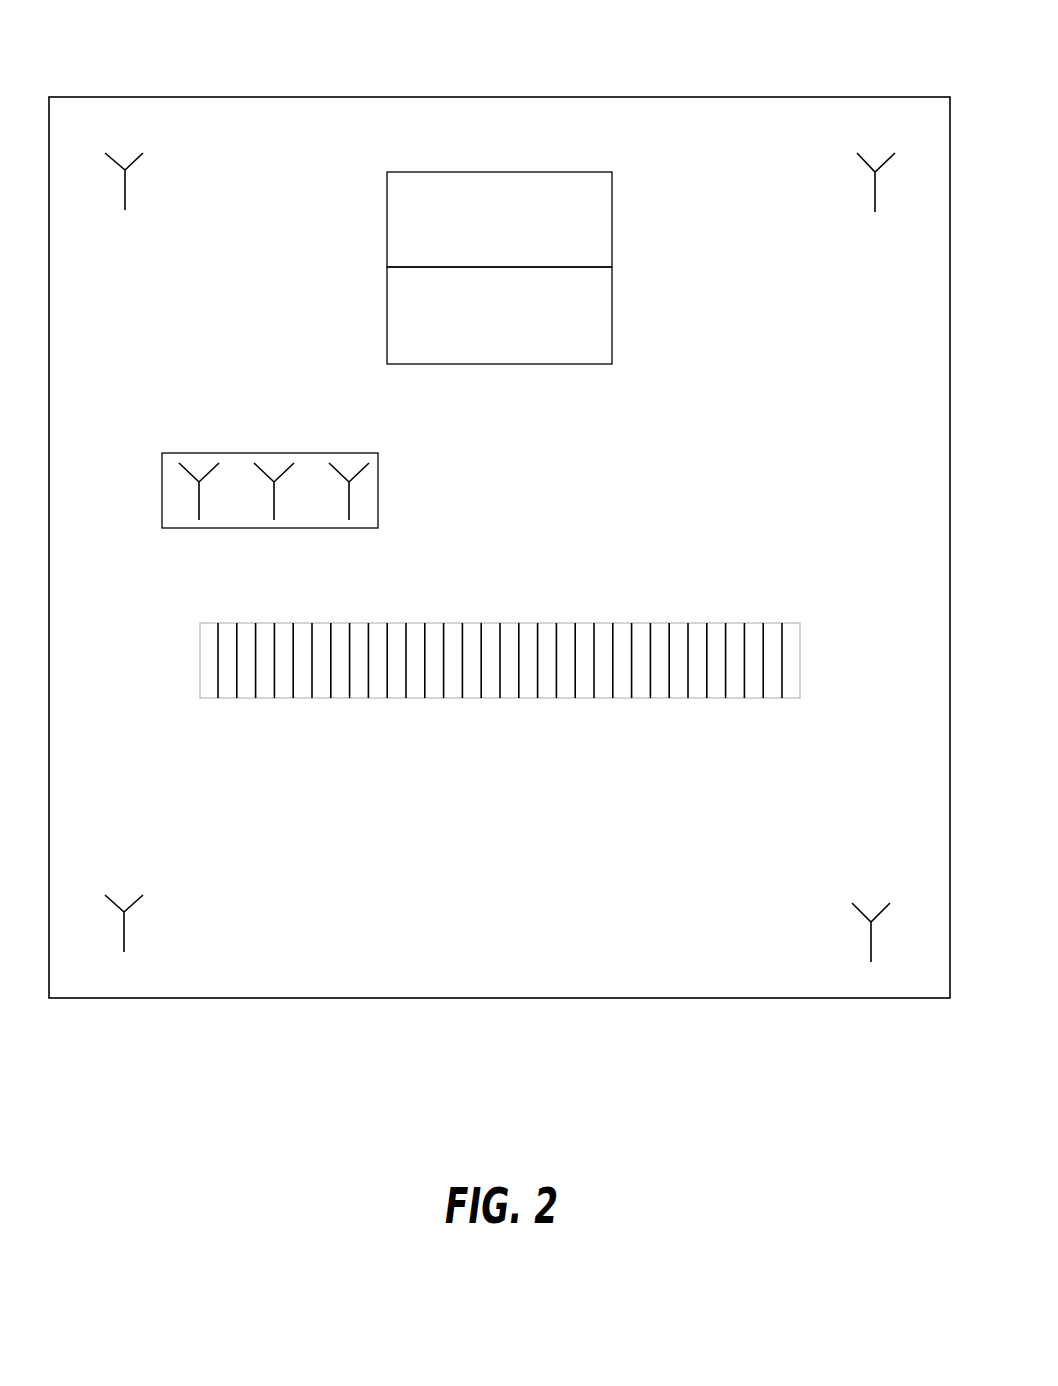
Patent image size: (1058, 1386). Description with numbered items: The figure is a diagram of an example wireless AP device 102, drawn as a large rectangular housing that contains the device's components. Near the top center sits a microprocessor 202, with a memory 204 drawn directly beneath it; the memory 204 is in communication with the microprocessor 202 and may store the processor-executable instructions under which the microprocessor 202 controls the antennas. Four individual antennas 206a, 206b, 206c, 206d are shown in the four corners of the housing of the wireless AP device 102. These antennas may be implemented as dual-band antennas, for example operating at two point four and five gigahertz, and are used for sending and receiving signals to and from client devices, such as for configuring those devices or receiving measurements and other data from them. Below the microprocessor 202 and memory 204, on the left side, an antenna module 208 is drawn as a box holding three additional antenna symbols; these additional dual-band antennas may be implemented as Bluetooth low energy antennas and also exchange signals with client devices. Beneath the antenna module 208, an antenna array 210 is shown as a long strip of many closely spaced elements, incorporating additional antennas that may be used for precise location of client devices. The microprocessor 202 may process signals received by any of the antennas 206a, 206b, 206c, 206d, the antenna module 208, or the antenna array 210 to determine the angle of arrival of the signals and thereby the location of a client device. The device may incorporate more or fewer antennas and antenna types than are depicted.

The wireless AP device 102 is at (650, 54).
The microprocessor 202 is at (499, 219).
The memory 204 is at (499, 315).
The antenna 206a is at (142, 170).
The antenna 206b is at (855, 173).
The antenna 206c is at (152, 914).
The antenna 206d is at (838, 902).
The antenna module 208 is at (283, 436).
The antenna array 210 is at (595, 612).